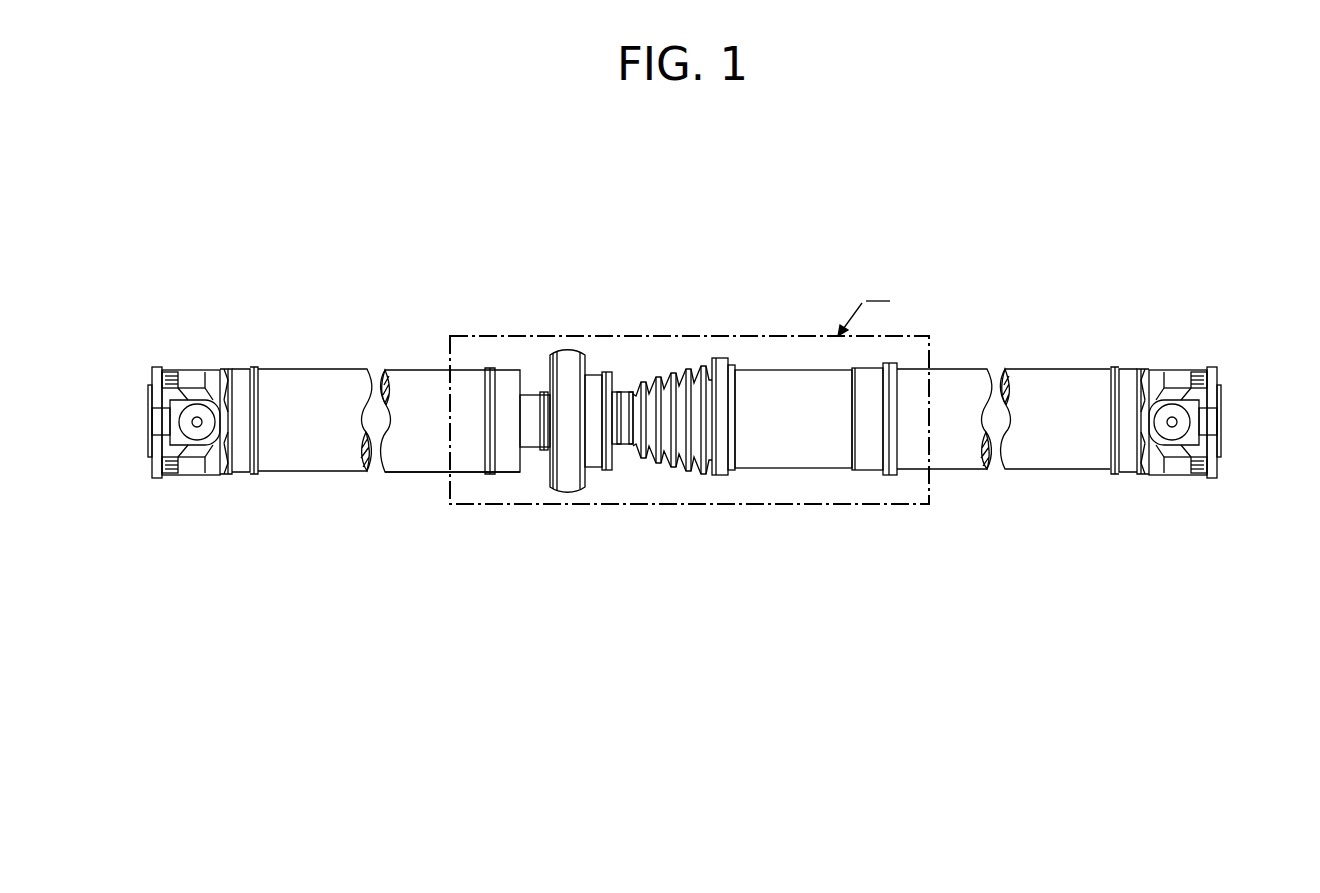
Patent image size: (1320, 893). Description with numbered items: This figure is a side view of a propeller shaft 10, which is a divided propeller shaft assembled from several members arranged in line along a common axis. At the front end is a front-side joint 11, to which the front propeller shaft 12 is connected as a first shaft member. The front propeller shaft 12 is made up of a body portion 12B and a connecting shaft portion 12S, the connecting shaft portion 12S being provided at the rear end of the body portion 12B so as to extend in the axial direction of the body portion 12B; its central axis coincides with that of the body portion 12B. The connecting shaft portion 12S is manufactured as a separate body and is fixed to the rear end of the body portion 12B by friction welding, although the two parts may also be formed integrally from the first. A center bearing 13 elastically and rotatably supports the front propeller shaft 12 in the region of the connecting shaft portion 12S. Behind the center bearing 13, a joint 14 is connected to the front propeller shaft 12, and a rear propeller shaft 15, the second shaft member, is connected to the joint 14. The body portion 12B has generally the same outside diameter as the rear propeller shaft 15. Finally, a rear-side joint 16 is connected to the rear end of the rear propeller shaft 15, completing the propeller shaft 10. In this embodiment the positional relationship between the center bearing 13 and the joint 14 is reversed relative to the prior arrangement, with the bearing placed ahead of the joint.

The propeller shaft 10 is at (889, 244).
The front-side joint 11 is at (186, 360).
The front propeller shaft 12 is at (403, 360).
The body portion 12B is at (423, 472).
The connecting shaft portion 12S is at (540, 449).
The center bearing 13 is at (587, 345).
The joint 14 is at (735, 345).
The rear propeller shaft 15 is at (955, 345).
The rear-side joint 16 is at (1165, 345).